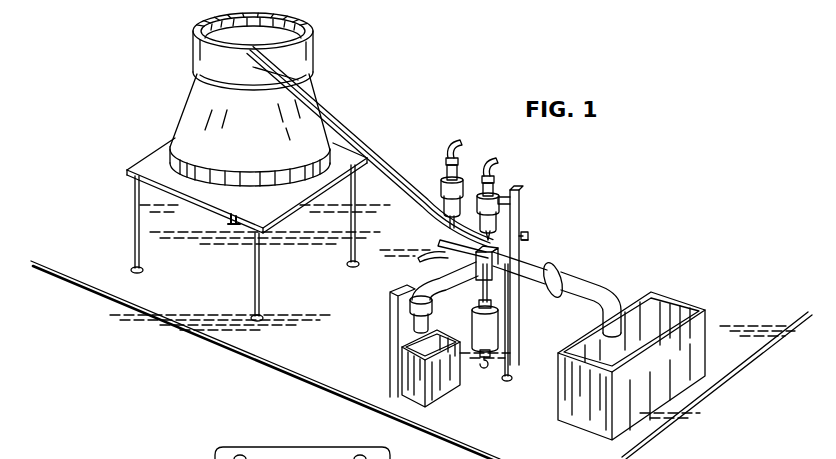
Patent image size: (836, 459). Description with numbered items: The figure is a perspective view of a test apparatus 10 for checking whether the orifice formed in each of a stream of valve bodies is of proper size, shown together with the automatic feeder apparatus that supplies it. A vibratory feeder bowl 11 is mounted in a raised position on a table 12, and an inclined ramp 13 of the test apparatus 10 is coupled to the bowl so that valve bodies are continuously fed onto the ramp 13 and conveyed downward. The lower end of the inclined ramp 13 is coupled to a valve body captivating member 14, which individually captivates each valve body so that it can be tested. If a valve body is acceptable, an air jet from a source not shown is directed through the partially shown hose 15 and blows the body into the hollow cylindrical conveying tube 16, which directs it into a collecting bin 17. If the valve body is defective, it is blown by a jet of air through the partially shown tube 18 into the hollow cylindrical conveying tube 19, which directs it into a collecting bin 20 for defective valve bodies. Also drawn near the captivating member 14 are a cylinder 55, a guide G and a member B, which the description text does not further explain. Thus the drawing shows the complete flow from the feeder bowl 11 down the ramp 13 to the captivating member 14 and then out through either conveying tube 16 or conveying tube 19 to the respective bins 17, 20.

The test apparatus 10 is at (522, 204).
The vibratory feeder bowl 11 is at (313, 44).
The table 12 is at (140, 156).
The inclined ramp 13 is at (343, 113).
The valve body captivating member 14 is at (494, 240).
The hose 15 is at (447, 248).
The conveying tube 16 is at (580, 280).
The collecting bin 17 is at (674, 298).
The tube 18 is at (523, 236).
The conveying tube 19 is at (416, 284).
The collecting bin 20 is at (459, 379).
The cylinder 55 is at (499, 333).
The guide G is at (417, 257).
The blade B is at (522, 240).